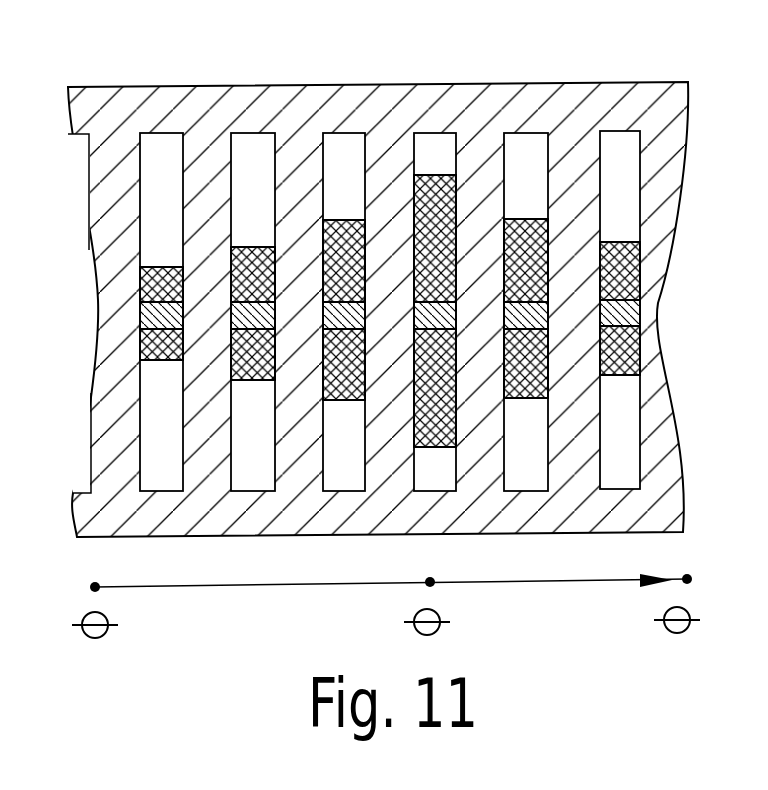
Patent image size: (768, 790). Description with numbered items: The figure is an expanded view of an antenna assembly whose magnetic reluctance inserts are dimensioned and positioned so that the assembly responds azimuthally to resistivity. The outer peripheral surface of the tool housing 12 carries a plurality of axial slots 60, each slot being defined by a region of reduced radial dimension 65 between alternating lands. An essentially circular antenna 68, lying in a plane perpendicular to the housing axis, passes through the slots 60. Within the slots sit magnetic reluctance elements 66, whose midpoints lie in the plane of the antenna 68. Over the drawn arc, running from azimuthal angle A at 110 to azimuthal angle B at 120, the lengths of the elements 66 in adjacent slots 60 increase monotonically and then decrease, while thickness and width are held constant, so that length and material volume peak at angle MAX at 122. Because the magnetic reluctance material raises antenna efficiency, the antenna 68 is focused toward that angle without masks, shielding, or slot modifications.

The tool housing 12 is at (667, 110).
The axial slots 60 is at (619, 138).
The regions of reduced radial dimensions 65 is at (448, 158).
The antenna 68 is at (600, 313).
The elements 66 is at (599, 358).
The azimuthal angle A 110 is at (103, 591).
The angle MAX 122 is at (425, 588).
The azimuthal angle B 120 is at (680, 582).